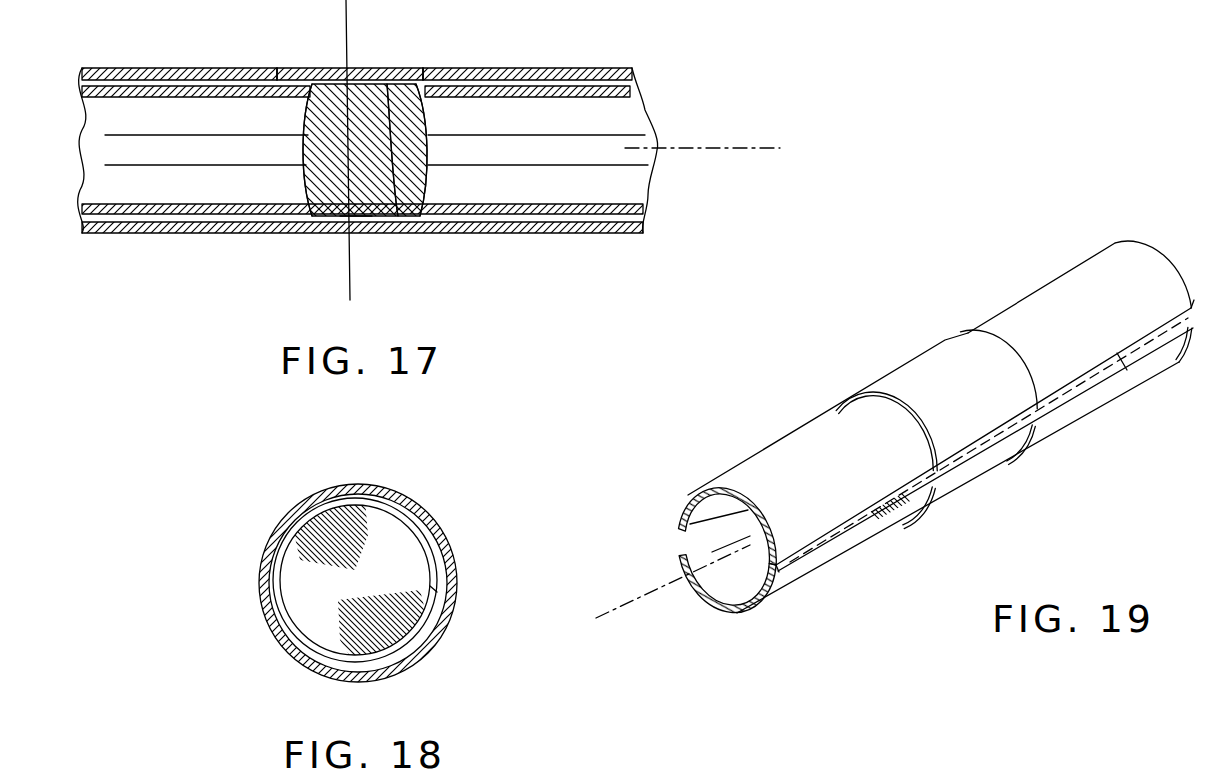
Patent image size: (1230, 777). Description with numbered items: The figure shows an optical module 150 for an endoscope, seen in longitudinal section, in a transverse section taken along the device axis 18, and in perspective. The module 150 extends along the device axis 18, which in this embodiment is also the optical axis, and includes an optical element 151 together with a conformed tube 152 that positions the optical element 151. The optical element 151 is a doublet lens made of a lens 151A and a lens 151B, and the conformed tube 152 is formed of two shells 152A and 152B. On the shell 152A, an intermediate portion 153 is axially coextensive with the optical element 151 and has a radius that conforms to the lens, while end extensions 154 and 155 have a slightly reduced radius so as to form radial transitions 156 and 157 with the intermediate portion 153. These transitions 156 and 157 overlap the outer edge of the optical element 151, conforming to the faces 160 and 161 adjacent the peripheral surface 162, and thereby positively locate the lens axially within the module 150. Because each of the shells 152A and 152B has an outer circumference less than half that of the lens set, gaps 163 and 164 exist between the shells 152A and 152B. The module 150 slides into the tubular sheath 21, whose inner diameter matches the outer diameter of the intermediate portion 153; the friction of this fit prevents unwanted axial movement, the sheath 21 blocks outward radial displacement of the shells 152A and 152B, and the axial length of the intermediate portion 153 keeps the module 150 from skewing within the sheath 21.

In FIG. 17, the device axis 18 is at (393, 300).
In FIG. 19, the device axis 18 is at (642, 604).
In FIG. 17, the tubular sheath 21 is at (344, 123).
In FIG. 18, the tubular sheath 21 is at (395, 490).
In FIG. 19, the tubular sheath 21 is at (932, 393).
In FIG. 17, the optical module 150 is at (667, 72).
In FIG. 18, the optical module 150 is at (462, 520).
In FIG. 19, the optical module 150 is at (1130, 237).
In FIG. 17, the optical element 151 is at (390, 143).
In FIG. 19, the optical element 151 is at (990, 452).
In FIG. 17, the lens 151A is at (343, 223).
In FIG. 17, the lens 151B is at (420, 212).
In FIG. 19, the conformed tube 152 is at (887, 475).
In FIG. 17, the shell 152A is at (612, 103).
In FIG. 19, the shell 152A is at (816, 424).
In FIG. 17, the shell 152B is at (645, 210).
In FIG. 18, the shell 152B is at (407, 635).
In FIG. 19, the shell 152B is at (857, 543).
In FIG. 17, the intermediate portion 153 is at (322, 70).
In FIG. 18, the intermediate portion 153 is at (273, 632).
In FIG. 19, the intermediate portion 153 is at (918, 375).
In FIG. 17, the end extension 154 is at (148, 80).
In FIG. 19, the end extension 154 is at (756, 467).
In FIG. 17, the end extension 155 is at (520, 77).
In FIG. 19, the end extension 155 is at (1080, 263).
In FIG. 17, the radial transition 156 is at (277, 78).
In FIG. 19, the radial transition 156 is at (835, 400).
In FIG. 17, the radial transition 157 is at (423, 67).
In FIG. 19, the radial transition 157 is at (942, 350).
In FIG. 17, the face 160 is at (293, 148).
In FIG. 18, the face 160 is at (313, 557).
In FIG. 19, the face 160 is at (903, 510).
In FIG. 17, the face 161 is at (430, 170).
In FIG. 17, the peripheral surface 162 is at (355, 217).
In FIG. 18, the peripheral surface 162 is at (457, 583).
In FIG. 19, the peripheral surface 162 is at (1023, 423).
In FIG. 17, the gap 163 is at (127, 150).
In FIG. 18, the gap 163 is at (262, 580).
In FIG. 19, the gap 163 is at (673, 541).
In FIG. 18, the gap 164 is at (458, 592).
In FIG. 19, the gap 164 is at (790, 562).